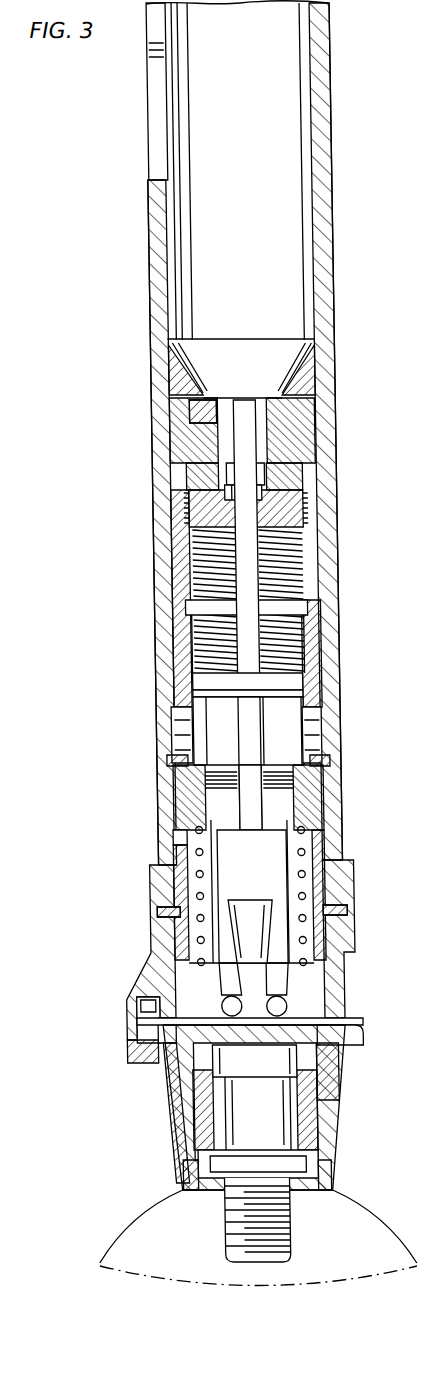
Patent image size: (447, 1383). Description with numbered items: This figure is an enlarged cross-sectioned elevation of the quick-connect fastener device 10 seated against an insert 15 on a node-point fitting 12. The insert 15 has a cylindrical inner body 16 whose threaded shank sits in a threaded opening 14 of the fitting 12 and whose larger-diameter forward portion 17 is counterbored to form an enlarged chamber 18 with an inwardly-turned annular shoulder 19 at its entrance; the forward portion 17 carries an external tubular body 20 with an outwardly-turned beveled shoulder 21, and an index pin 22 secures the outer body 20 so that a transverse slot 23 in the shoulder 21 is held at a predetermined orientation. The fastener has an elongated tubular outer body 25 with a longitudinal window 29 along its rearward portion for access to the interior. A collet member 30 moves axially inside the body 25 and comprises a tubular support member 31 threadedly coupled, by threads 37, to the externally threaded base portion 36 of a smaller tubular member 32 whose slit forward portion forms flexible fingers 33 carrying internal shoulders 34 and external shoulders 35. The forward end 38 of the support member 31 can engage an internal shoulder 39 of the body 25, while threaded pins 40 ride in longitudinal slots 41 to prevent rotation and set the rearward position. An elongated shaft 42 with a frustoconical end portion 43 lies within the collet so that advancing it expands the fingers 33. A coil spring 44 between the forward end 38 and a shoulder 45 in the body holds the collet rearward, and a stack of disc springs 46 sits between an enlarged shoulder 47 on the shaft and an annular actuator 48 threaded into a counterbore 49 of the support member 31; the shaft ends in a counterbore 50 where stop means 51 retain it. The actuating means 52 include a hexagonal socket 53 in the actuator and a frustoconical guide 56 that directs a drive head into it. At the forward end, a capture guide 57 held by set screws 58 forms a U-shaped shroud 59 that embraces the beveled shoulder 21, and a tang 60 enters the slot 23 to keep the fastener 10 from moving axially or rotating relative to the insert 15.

The quick-connect fastener device 10 is at (134, 576).
The node-point fitting 12 is at (121, 1225).
The threaded opening 14 is at (273, 1230).
The insert 15 is at (321, 1165).
The cylindrical inner body 16 is at (315, 1138).
The larger-diameter forward portion 17 is at (333, 1068).
The enlarged chamber 18 is at (308, 1085).
The inwardly-turned annular shoulder 19 is at (275, 1038).
The external tubular body 20 is at (327, 1107).
The outwardly-turned beveled shoulder 21 is at (341, 1040).
The index pin 22 is at (165, 1167).
The transverse slot 23 is at (134, 1028).
The tubular outer body 25 is at (152, 630).
The longitudinal window 29 is at (151, 128).
The collet member 30 is at (305, 632).
The tubular support member 31 is at (179, 683).
The smaller tubular member 32 is at (320, 867).
The flexible fingers 33 is at (285, 993).
The internal shoulders 34 is at (146, 1110).
The external shoulders 35 is at (279, 1005).
The base portion 36 is at (162, 812).
The threads 37 is at (288, 788).
The forward end of collet support member 38 is at (159, 838).
The internal shoulder 39 is at (163, 868).
The threaded pins 40 is at (155, 760).
The longitudinal slots 41 is at (302, 727).
The elongated shaft 42 is at (217, 728).
The frustoconical end portion 43 is at (319, 910).
The coil spring 44 is at (294, 848).
The shoulder 45 is at (288, 957).
The disc springs 46 is at (290, 653).
The enlarged shoulder 47 is at (289, 697).
The annular actuator 48 is at (286, 412).
The internally threaded counterbore 49 is at (291, 580).
The rearwardly-opening counterbore 50 is at (224, 497).
The stop means 51 is at (237, 510).
The actuating means 52 is at (286, 442).
The socket 53 is at (203, 440).
The frustoconical guide 56 is at (304, 328).
The capture guide 57 is at (108, 977).
The set screws 58 is at (143, 913).
The U-shaped shroud 59 is at (111, 1050).
The tang 60 is at (136, 1037).